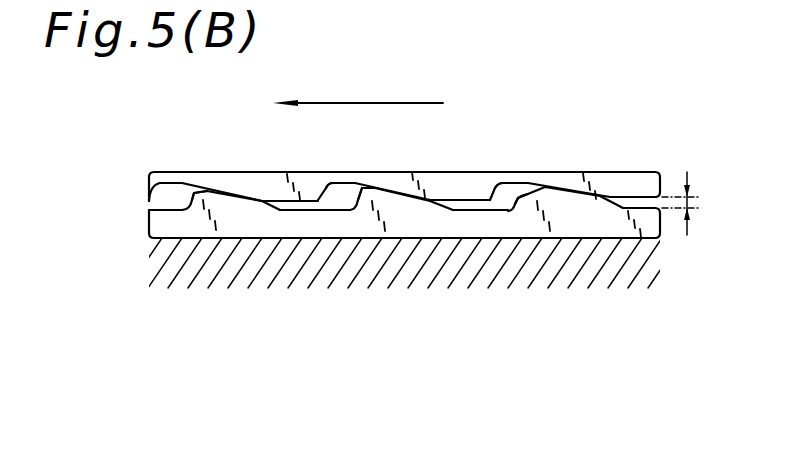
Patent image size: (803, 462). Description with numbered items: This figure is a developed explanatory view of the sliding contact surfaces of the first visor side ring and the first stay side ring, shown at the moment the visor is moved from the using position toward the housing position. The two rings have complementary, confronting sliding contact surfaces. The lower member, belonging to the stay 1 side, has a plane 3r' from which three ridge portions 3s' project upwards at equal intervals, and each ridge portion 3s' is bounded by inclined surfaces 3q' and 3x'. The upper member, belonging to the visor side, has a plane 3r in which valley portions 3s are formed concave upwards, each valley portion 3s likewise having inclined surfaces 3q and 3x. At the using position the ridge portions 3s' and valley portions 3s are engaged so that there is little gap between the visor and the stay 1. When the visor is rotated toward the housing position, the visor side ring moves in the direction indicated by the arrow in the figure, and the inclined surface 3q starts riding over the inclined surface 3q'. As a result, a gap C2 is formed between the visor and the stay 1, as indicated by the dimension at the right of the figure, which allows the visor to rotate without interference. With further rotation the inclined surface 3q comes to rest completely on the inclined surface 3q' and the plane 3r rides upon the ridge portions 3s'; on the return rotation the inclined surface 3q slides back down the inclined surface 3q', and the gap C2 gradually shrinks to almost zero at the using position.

The stay 1 is at (398, 349).
The valley portion 3s is at (324, 151).
The inclined surface 3q is at (407, 160).
The inclined surface 3q' is at (402, 165).
The plane 3r is at (396, 161).
The plane 3r' is at (408, 270).
The inclined surface 3x is at (440, 150).
The inclined surface 3x' is at (360, 270).
The ridge portion 3s' is at (384, 275).
The gap C2 is at (685, 186).